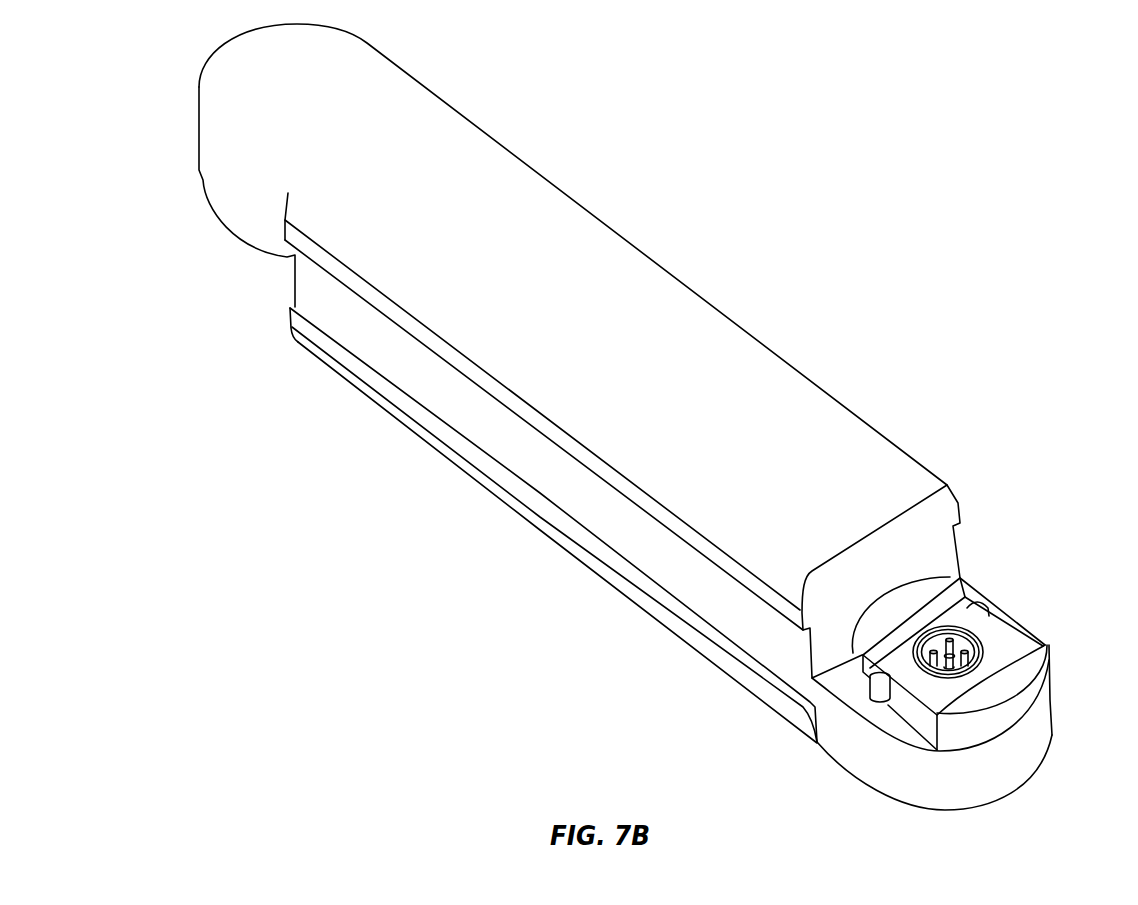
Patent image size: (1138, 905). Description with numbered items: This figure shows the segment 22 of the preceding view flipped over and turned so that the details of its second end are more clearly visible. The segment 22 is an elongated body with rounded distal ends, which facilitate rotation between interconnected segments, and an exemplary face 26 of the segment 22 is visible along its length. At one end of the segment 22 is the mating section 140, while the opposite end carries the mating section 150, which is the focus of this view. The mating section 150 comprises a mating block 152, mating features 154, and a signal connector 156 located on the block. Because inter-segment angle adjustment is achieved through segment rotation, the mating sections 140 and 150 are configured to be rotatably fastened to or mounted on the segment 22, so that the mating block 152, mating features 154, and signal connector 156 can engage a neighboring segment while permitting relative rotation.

The mating section 140 is at (571, 301).
The segment 22 is at (497, 442).
The face 26 is at (553, 525).
The mating section 150 is at (952, 665).
The mating block 152 is at (1030, 663).
The mating features 154 is at (976, 598).
The signal connector 156 is at (972, 649).